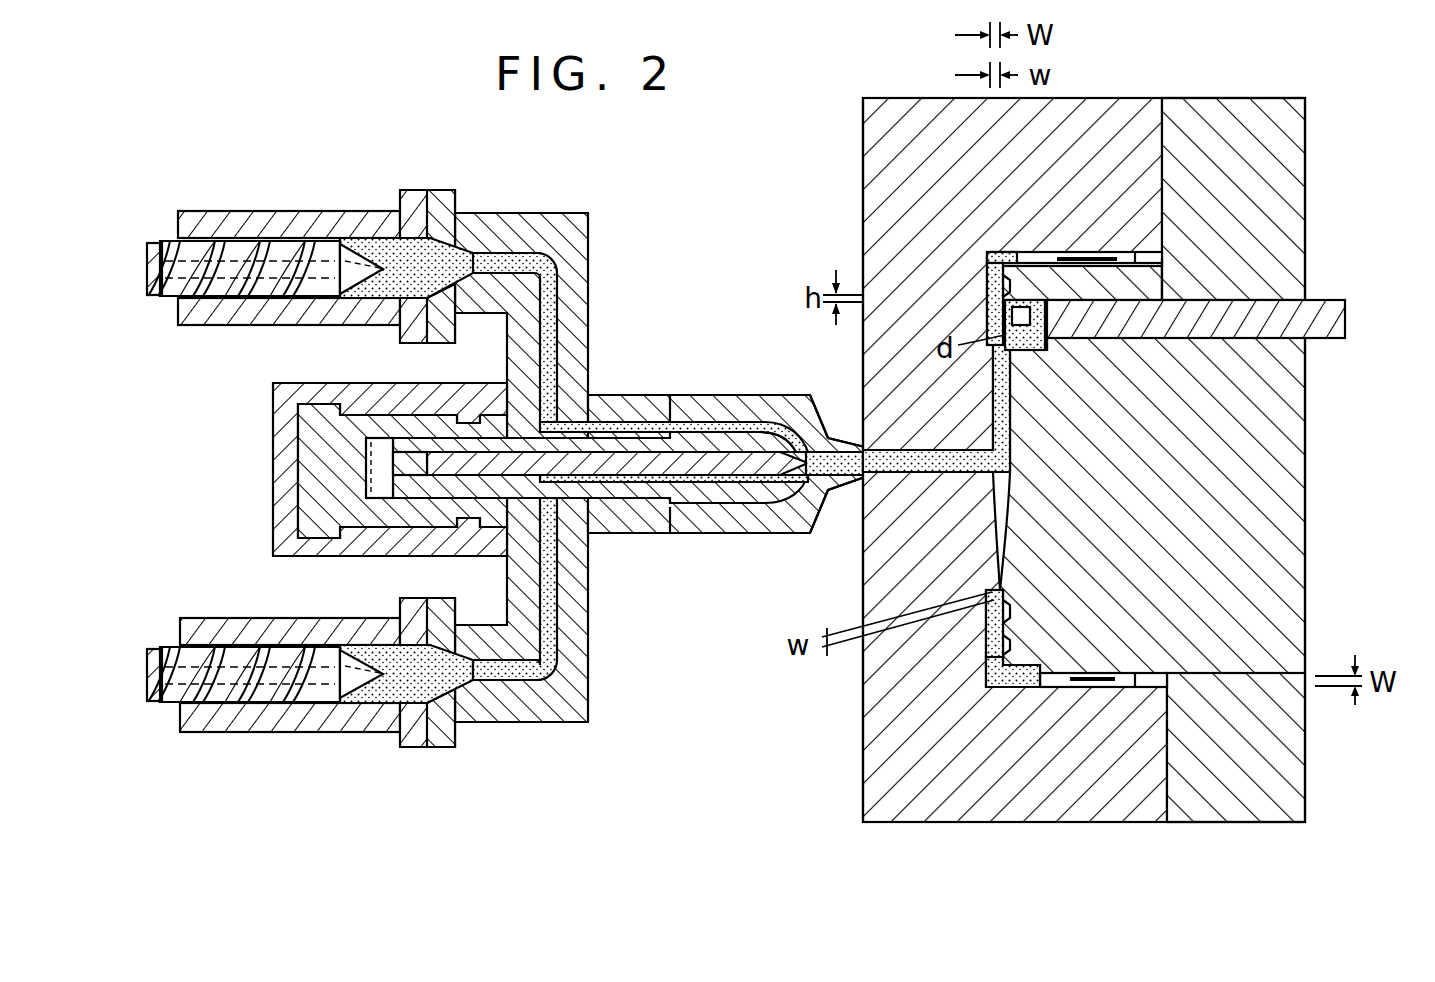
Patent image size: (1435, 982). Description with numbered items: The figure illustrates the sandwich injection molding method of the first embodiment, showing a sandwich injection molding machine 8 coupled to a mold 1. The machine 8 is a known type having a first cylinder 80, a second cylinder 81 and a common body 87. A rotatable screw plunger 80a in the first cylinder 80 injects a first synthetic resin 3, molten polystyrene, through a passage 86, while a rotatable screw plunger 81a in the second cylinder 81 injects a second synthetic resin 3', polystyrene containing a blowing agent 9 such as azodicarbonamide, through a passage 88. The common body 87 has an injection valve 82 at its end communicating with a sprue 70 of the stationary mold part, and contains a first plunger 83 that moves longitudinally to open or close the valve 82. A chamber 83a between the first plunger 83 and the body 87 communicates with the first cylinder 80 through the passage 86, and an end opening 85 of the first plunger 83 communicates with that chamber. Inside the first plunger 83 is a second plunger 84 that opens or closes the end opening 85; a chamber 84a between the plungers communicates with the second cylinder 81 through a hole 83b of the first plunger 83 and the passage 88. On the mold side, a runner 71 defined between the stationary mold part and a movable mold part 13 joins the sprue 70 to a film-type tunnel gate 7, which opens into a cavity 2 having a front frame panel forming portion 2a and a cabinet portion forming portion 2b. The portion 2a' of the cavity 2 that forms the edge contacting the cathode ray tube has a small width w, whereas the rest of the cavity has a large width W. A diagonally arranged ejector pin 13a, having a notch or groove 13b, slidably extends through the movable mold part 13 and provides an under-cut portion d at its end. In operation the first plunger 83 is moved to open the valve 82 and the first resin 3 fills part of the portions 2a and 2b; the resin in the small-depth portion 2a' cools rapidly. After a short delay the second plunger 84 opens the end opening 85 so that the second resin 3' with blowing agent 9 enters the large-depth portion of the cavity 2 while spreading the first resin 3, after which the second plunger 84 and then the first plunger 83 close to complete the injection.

The mold 1 is at (1122, 94).
The cavity 2 is at (1053, 246).
The front frame panel forming portion 2a is at (956, 464).
The edge forming portion of the cavity 2a' is at (974, 483).
The cabinet portion forming portion 2b is at (1160, 276).
The first synthetic resin 3 is at (728, 472).
The second synthetic resin 3' is at (440, 715).
The tunnel gate 7 is at (1010, 272).
The sandwich injection molding machine 8 is at (236, 196).
The blowing agent 9 is at (492, 682).
The movable mold part 13 is at (1283, 533).
The ejector pin 13a is at (1320, 305).
The notch or groove 13b is at (1070, 352).
The sprue 70 is at (870, 527).
The runner 71 is at (1012, 402).
The first cylinder 80 is at (313, 212).
The screw plunger 80a is at (222, 280).
The second cylinder 81 is at (288, 733).
The screw plunger 81a is at (237, 658).
The injection valve 82 is at (805, 533).
The first plunger 83 is at (688, 425).
The chamber 83a is at (672, 422).
The hole 83b is at (510, 545).
The second plunger 84 is at (612, 460).
The chamber 84a is at (668, 484).
The end opening 85 is at (796, 422).
The passage 86 is at (560, 300).
The common body 87 is at (763, 395).
The passage 88 is at (548, 640).